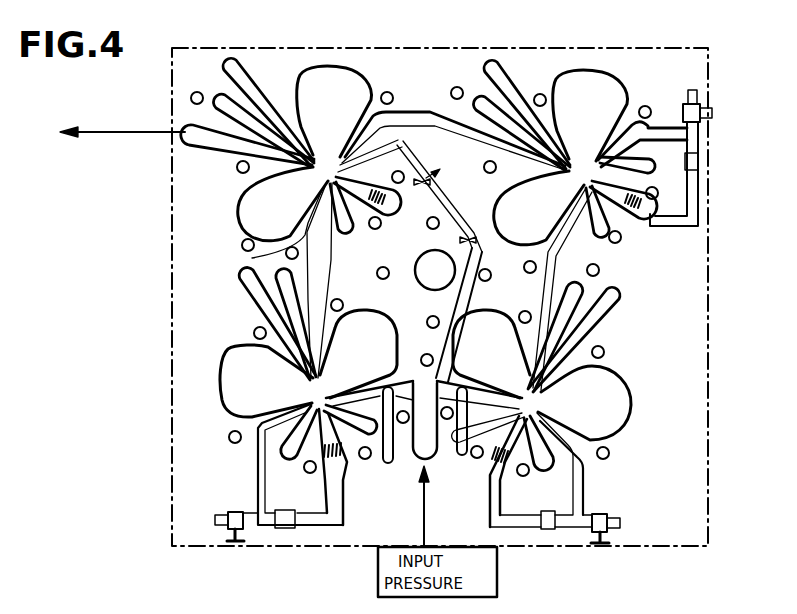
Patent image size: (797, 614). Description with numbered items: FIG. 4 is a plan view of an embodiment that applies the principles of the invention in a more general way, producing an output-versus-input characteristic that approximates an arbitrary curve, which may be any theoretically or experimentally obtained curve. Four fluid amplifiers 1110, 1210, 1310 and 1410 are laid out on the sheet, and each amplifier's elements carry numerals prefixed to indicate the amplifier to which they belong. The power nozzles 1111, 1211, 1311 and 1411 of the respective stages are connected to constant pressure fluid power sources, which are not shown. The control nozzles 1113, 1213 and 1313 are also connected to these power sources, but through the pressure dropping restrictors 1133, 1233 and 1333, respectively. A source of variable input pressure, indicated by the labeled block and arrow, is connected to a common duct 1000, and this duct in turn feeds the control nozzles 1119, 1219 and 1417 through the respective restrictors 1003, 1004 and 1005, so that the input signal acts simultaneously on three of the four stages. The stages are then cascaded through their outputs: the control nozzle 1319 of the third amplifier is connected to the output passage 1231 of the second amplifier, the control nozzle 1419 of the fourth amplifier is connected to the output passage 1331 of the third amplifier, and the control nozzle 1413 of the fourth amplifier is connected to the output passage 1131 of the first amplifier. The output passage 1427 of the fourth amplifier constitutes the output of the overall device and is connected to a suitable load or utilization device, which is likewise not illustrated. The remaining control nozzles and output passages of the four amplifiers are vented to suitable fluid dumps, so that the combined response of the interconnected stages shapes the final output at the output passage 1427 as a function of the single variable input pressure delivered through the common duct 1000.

The common duct 1000 is at (415, 462).
The restrictor 1003 is at (337, 462).
The restrictor 1004 is at (462, 445).
The restrictor 1005 is at (420, 190).
The fluid amplifier 1110 is at (229, 347).
The power nozzle 1111 is at (335, 473).
The control nozzle 1113 is at (256, 423).
The control nozzle 1119 is at (370, 397).
The output passage 1131 is at (318, 298).
The pressure dropping restrictor 1133 is at (243, 533).
The fluid amplifier 1210 is at (622, 352).
The power nozzle 1211 is at (490, 478).
The control nozzle 1213 is at (580, 450).
The control nozzle 1219 is at (478, 393).
The output passage 1231 is at (575, 285).
The pressure dropping restrictor 1233 is at (625, 545).
The fluid amplifier 1310 is at (588, 76).
The power nozzle 1311 is at (648, 238).
The control nozzle 1313 is at (640, 130).
The control nozzle 1319 is at (484, 272).
The output passage 1331 is at (466, 138).
The pressure dropping restrictor 1333 is at (700, 128).
The fluid amplifier 1410 is at (330, 75).
The power nozzle 1411 is at (392, 226).
The control nozzle 1413 is at (266, 218).
The control nozzle 1417 is at (418, 110).
The control nozzle 1419 is at (400, 147).
The output passage 1427 is at (186, 124).